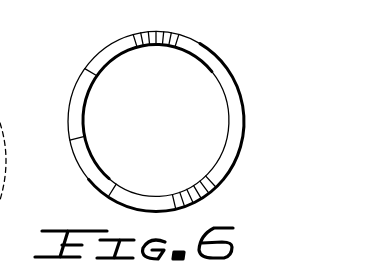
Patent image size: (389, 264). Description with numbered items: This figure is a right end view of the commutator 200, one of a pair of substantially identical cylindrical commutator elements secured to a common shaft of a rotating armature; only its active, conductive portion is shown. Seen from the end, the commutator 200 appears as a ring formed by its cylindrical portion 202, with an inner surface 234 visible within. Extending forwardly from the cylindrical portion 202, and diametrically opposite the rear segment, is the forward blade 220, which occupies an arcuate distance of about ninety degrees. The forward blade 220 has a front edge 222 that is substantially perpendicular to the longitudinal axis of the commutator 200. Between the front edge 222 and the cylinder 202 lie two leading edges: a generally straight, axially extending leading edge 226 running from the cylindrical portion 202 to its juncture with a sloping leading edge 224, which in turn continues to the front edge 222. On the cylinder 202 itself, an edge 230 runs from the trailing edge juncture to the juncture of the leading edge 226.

The commutator element 200 is at (149, 126).
The cylindrical portion 202 is at (228, 67).
The forward blade 220 is at (72, 89).
The front edge 222 is at (69, 108).
The sloping leading edge 224 is at (81, 163).
The axially extending leading edge 226 is at (108, 193).
The edge 230 is at (141, 206).
The inner ring surface 234 is at (113, 57).